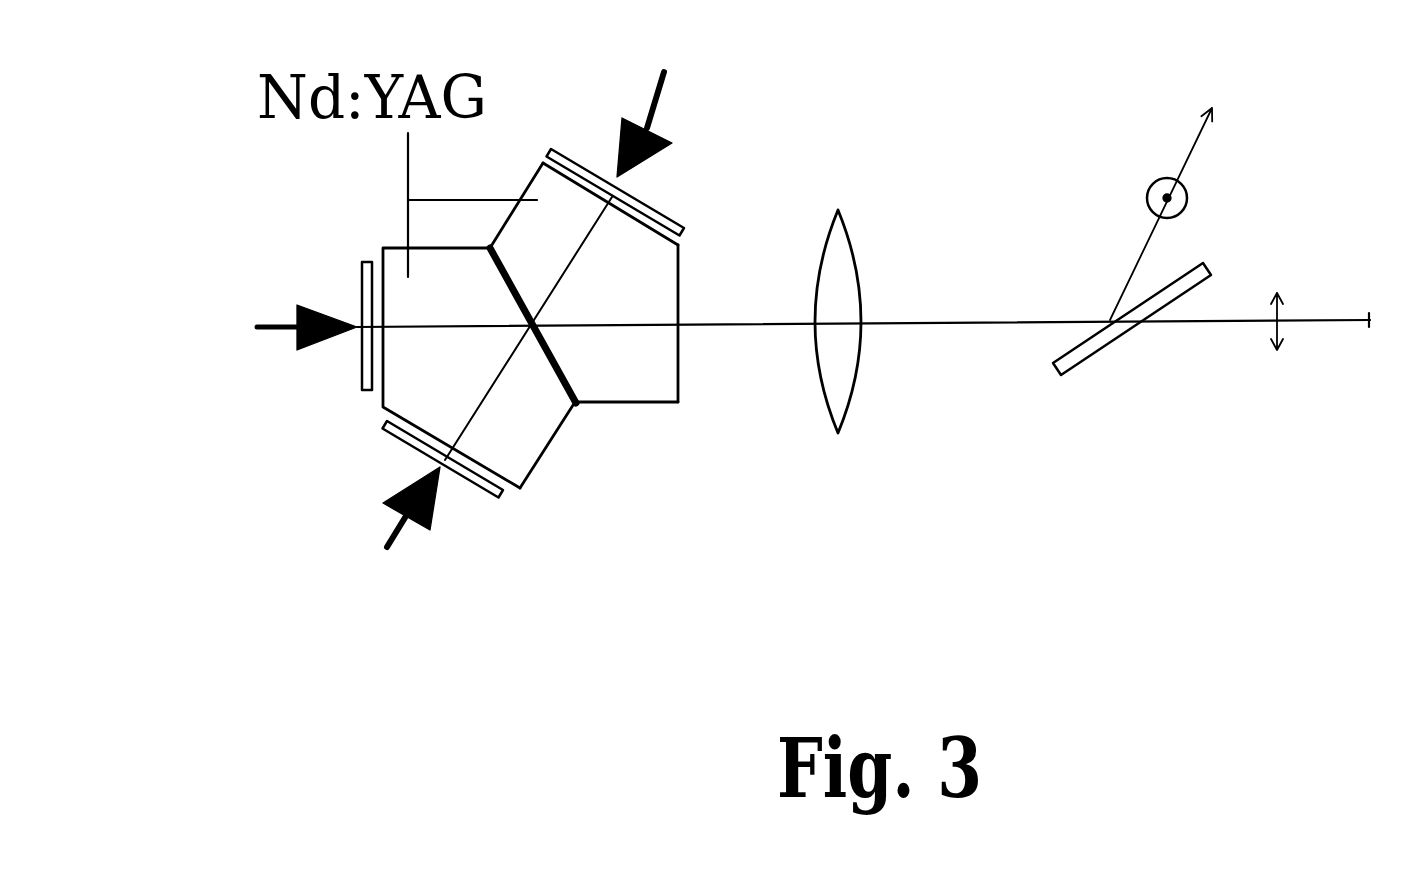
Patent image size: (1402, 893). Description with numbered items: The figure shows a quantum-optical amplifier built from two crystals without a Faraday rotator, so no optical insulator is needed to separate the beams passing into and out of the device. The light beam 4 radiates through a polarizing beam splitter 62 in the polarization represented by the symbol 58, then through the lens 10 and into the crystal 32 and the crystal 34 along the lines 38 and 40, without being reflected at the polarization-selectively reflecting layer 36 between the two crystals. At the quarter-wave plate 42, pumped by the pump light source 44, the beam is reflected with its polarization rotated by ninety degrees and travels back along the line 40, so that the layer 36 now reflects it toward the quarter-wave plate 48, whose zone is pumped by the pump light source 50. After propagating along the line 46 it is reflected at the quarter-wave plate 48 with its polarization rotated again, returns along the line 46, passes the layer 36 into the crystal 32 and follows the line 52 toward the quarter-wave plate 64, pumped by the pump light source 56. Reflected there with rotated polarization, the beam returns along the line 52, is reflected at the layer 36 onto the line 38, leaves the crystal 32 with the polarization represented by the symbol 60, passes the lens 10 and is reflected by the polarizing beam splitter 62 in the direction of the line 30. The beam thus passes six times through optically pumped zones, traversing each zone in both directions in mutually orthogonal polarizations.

The light beam 4 is at (1336, 321).
The lens 10 is at (838, 254).
The line 30 is at (1192, 143).
The first crystal 32 is at (643, 387).
The further crystal 34 is at (517, 460).
The polarization-selectively reflecting layer 36 is at (490, 247).
The line 38 is at (583, 325).
The line 40 is at (410, 330).
The quarter-wave plate 42 is at (362, 376).
The pump light source 44 is at (257, 330).
The line 46 is at (472, 413).
The quarter-wave plate 48 is at (408, 440).
The pump light source 50 is at (390, 548).
The line 52 is at (548, 298).
The pump light source 56 is at (664, 74).
The symbol 58 is at (1278, 296).
The symbol 60 is at (1187, 202).
The polarizing beam splitter 62 is at (1073, 366).
The quarter-wave plate 64 is at (640, 203).